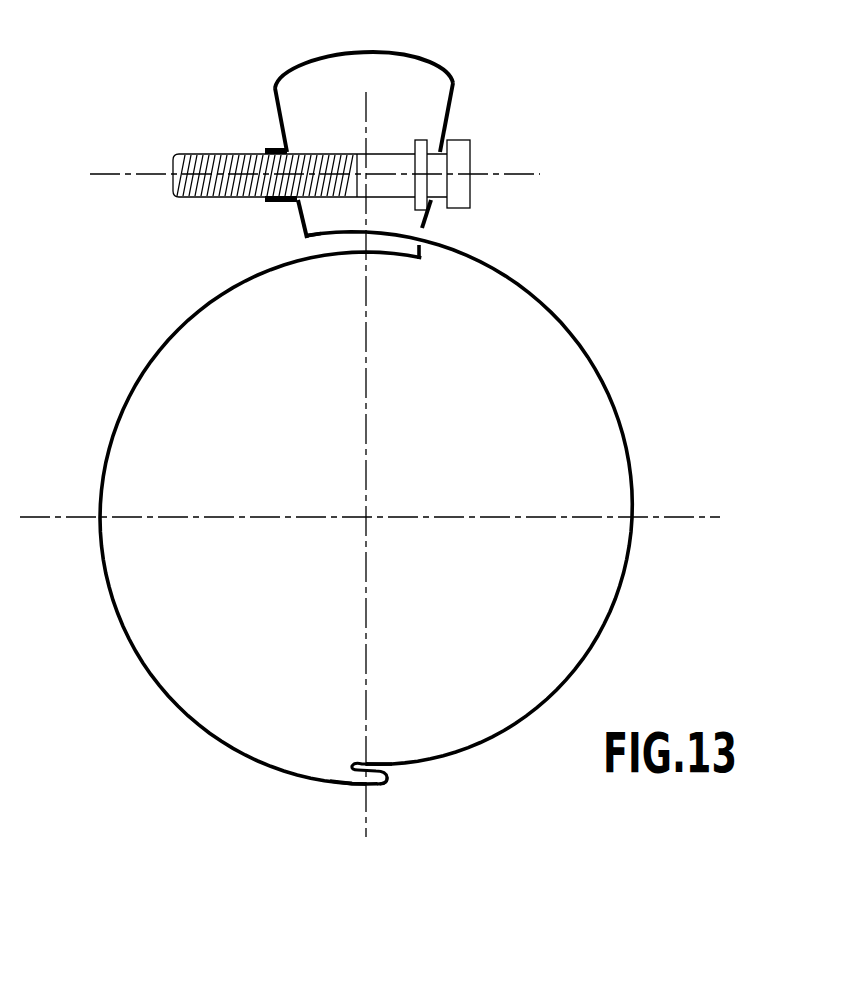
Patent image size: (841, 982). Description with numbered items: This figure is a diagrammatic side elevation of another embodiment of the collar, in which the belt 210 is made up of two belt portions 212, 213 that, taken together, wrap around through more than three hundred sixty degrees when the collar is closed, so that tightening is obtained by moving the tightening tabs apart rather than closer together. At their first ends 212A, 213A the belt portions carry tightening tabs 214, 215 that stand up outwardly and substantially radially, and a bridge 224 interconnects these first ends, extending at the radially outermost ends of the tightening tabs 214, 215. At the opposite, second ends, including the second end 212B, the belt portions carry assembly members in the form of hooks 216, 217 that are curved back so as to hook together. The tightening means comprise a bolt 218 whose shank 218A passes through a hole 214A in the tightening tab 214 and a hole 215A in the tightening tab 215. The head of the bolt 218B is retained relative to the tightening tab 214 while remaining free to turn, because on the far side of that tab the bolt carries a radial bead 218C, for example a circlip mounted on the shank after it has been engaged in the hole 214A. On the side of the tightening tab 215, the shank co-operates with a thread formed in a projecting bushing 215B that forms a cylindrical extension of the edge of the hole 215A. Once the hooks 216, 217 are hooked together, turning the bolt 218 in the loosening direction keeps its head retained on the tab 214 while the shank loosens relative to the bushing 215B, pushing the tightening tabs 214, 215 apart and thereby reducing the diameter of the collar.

The belt 210 is at (599, 344).
The belt portion 212 is at (105, 460).
The first end of belt portion 212A is at (397, 258).
The second end of belt portion 212B is at (335, 782).
The belt portion 213 is at (623, 420).
The first end of belt portion 213A is at (330, 237).
The tightening tab 214 is at (455, 100).
The hole 214A is at (433, 200).
The tightening tab 215 is at (272, 102).
The hole 215A is at (277, 178).
The projecting bushing 215B is at (273, 147).
The hook 216 is at (387, 778).
The hook 217 is at (353, 767).
The bolt 218 is at (378, 123).
The shank of the bolt 218A is at (317, 160).
The head of the bolt 218B is at (460, 192).
The radial bead 218C is at (420, 143).
The bridge 224 is at (340, 53).